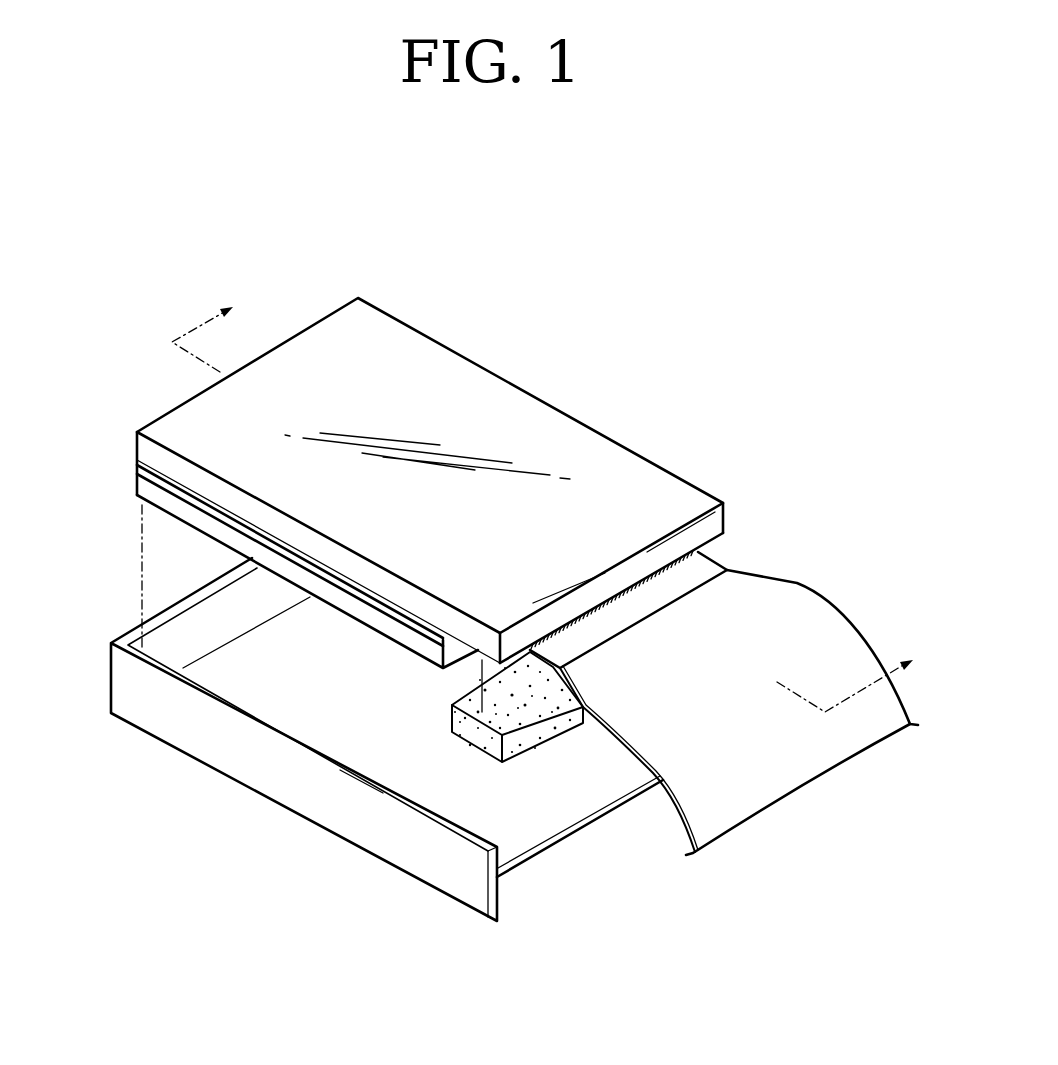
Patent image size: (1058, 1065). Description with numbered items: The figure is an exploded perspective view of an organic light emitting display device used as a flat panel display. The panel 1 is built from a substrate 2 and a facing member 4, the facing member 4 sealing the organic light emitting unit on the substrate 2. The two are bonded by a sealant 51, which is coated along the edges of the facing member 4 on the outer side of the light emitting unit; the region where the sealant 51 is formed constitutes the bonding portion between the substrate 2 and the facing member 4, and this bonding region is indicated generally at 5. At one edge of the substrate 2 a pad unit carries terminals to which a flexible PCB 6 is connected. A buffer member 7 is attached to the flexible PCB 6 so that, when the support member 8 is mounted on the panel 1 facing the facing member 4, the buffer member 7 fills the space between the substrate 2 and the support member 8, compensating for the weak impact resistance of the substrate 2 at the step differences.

The panel 1 is at (720, 362).
The substrate 2 is at (148, 448).
The facing member 4 is at (150, 492).
The sealing member 5 is at (196, 514).
The sealant 51 is at (138, 470).
The flexible PCB 6 is at (848, 642).
The buffer member 7 is at (527, 740).
The support member 8 is at (333, 817).